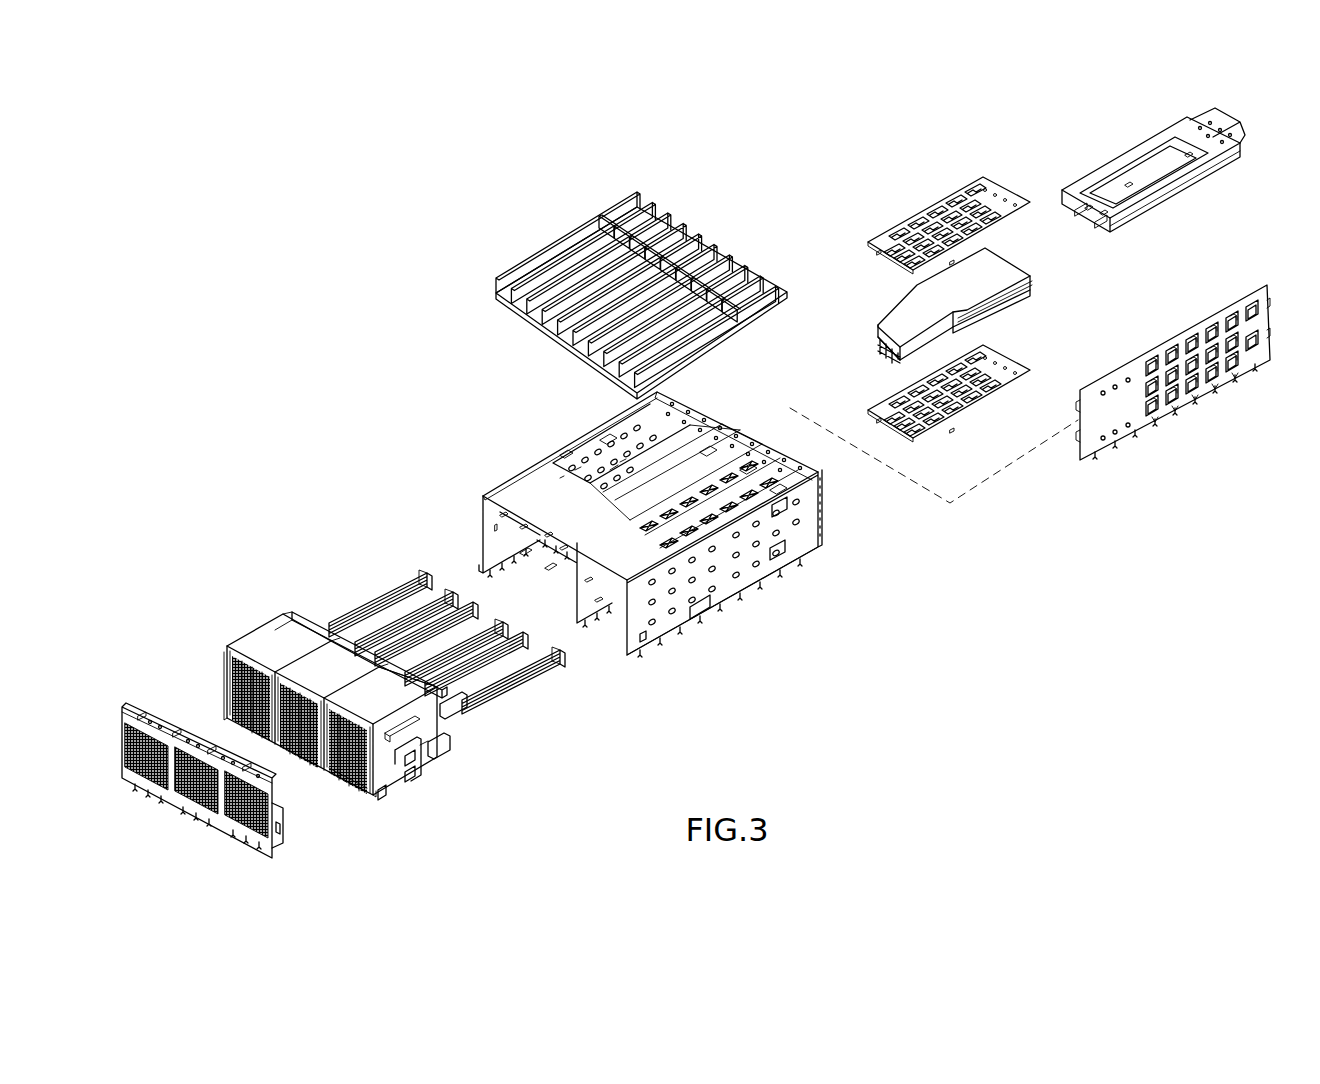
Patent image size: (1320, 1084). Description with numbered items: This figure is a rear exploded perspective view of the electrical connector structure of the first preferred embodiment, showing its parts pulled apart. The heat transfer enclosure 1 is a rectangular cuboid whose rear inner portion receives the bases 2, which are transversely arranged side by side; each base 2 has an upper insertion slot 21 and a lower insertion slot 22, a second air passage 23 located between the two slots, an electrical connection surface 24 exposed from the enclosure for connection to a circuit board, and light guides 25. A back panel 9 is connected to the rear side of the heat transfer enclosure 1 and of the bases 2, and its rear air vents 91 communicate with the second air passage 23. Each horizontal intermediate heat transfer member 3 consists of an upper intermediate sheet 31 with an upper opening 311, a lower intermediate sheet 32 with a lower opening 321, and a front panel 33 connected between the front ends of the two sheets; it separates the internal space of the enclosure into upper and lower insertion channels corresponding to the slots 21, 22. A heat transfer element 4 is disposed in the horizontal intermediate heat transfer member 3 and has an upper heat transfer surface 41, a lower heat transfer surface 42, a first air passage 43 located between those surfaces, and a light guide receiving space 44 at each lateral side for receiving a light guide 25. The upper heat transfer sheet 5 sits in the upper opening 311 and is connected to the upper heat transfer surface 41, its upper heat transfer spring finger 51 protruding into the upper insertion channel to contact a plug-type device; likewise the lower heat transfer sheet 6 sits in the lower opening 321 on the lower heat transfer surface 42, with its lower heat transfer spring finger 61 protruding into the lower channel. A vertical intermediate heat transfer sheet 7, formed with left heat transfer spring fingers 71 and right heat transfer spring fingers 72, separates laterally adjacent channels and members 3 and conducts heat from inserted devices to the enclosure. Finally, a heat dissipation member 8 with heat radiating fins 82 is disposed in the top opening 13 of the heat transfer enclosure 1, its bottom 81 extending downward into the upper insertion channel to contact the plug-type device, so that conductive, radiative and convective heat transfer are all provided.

The heat transfer enclosure 1 is at (651, 518).
The top opening 13 is at (606, 418).
The base 2 is at (394, 701).
The upper insertion slot 21 is at (477, 712).
The lower insertion slot 22 is at (447, 752).
The second air passage 23 is at (345, 785).
The electrical connection surface 24 is at (392, 797).
The light guide 25 is at (532, 690).
The horizontal intermediate heat transfer member 3 is at (1162, 188).
The upper intermediate sheet 31 is at (1131, 155).
The upper opening 311 is at (1112, 165).
The lower intermediate sheet 32 is at (1151, 214).
The lower opening 321 is at (1178, 197).
The front panel 33 is at (1244, 150).
The heat transfer element 4 is at (953, 302).
The upper heat transfer surface 41 is at (997, 270).
The lower heat transfer surface 42 is at (1012, 312).
The first air passage 43 is at (878, 337).
The light guide receiving space 44 is at (1035, 285).
The upper heat transfer sheet 5 is at (934, 203).
The upper heat transfer spring finger 51 is at (948, 200).
The lower heat transfer sheet 6 is at (937, 397).
The lower heat transfer spring finger 61 is at (912, 397).
The vertical intermediate heat transfer sheet 7 is at (1191, 393).
The left heat transfer spring fingers 71 is at (1197, 325).
The right heat transfer spring fingers 72 is at (1185, 345).
The heat dissipation member 8 is at (612, 293).
The bottom 81 is at (503, 312).
The heat radiating fin 82 is at (600, 228).
The back panel 9 is at (198, 736).
The rear air vent 91 is at (178, 805).